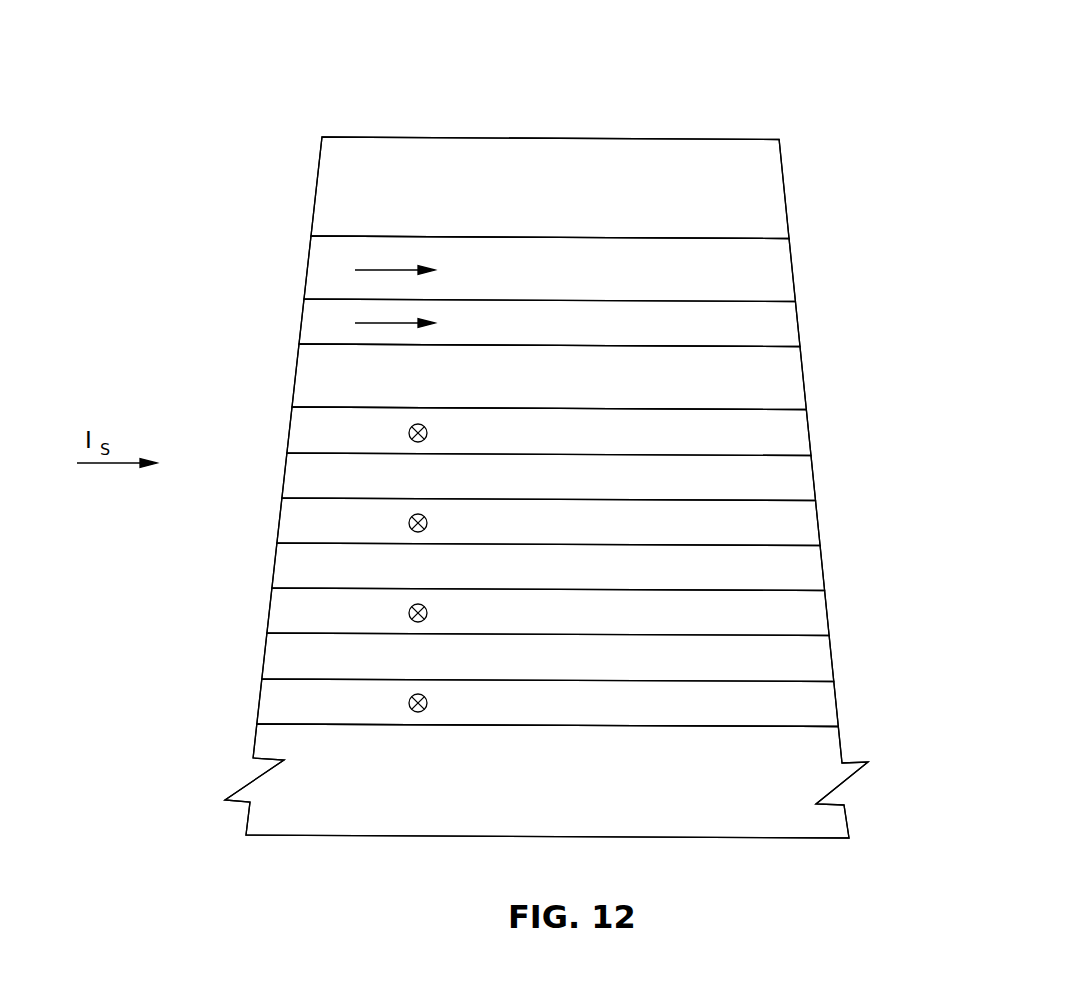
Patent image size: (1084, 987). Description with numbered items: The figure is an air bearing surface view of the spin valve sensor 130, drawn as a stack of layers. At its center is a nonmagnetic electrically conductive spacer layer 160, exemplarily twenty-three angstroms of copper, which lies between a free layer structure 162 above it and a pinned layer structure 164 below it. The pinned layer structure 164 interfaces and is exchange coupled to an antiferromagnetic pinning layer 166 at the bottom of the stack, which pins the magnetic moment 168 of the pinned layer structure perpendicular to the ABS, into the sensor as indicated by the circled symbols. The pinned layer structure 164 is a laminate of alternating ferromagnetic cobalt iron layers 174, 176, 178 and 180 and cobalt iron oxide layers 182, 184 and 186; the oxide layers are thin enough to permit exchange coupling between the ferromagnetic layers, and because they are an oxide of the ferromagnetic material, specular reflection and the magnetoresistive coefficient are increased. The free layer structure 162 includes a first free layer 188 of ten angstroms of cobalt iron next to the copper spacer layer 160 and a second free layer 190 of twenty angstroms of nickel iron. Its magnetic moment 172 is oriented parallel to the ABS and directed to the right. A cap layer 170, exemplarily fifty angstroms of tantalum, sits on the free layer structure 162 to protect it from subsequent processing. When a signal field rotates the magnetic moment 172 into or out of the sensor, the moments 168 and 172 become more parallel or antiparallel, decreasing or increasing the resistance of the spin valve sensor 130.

The spin valve sensor 130 is at (731, 101).
The spacer layer 160 is at (804, 373).
The free layer structure 162 is at (235, 344).
The pinned layer structure 164 is at (170, 724).
The antiferromagnetic pinning layer 166 is at (841, 742).
The magnetic moment of pinned layer structure 168 is at (409, 433).
The cap layer 170 is at (785, 185).
The magnetic moment of free layer structure 172 is at (382, 270).
The first ferromagnetic layer 174 is at (837, 700).
The second ferromagnetic layer 176 is at (828, 614).
The third ferromagnetic layer 178 is at (819, 522).
The fourth ferromagnetic layer 180 is at (809, 429).
The first oxide layer 182 is at (833, 656).
The second oxide layer 184 is at (824, 570).
The third oxide layer 186 is at (814, 475).
The first free layer 188 is at (798, 320).
The second free layer 190 is at (793, 267).